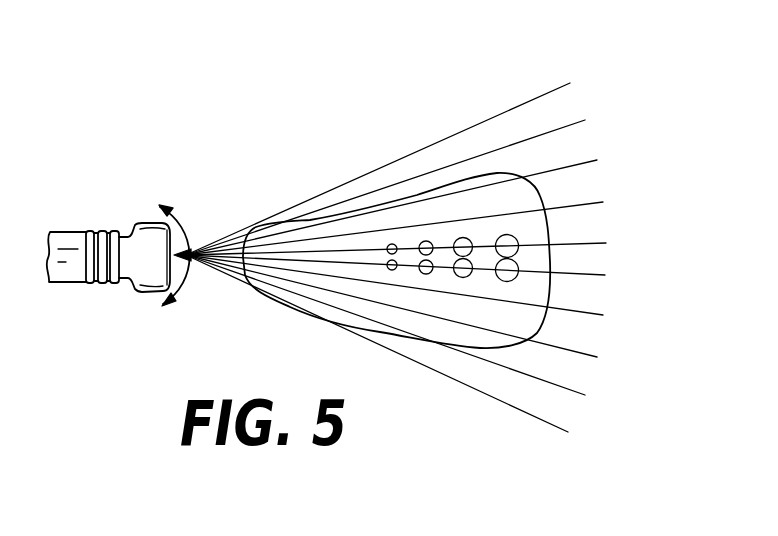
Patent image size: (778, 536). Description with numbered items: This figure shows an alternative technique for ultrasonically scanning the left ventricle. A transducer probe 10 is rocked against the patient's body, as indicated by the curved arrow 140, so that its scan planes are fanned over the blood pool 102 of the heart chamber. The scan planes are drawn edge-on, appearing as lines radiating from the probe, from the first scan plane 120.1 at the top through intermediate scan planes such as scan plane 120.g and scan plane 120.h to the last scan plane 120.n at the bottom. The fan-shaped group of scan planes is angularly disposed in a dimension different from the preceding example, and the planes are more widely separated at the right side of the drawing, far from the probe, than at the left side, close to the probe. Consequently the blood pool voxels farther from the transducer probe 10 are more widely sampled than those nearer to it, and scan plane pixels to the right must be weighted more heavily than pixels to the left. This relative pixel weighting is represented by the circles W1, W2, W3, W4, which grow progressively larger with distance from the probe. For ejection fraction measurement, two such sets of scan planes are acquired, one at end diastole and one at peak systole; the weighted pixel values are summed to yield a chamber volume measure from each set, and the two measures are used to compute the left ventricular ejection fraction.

The transducer probe 10 is at (63, 270).
The arrow 140 is at (184, 228).
The blood pool 102 is at (538, 200).
The scan plane 120.1 is at (547, 90).
The scan plane 120.g is at (592, 238).
The scan plane 120.h is at (593, 278).
The scan plane 120.n is at (555, 428).
The pixel weighting circle W1 is at (390, 271).
The pixel weighting circle W2 is at (426, 275).
The pixel weighting circle W3 is at (463, 278).
The pixel weighting circle W4 is at (508, 282).